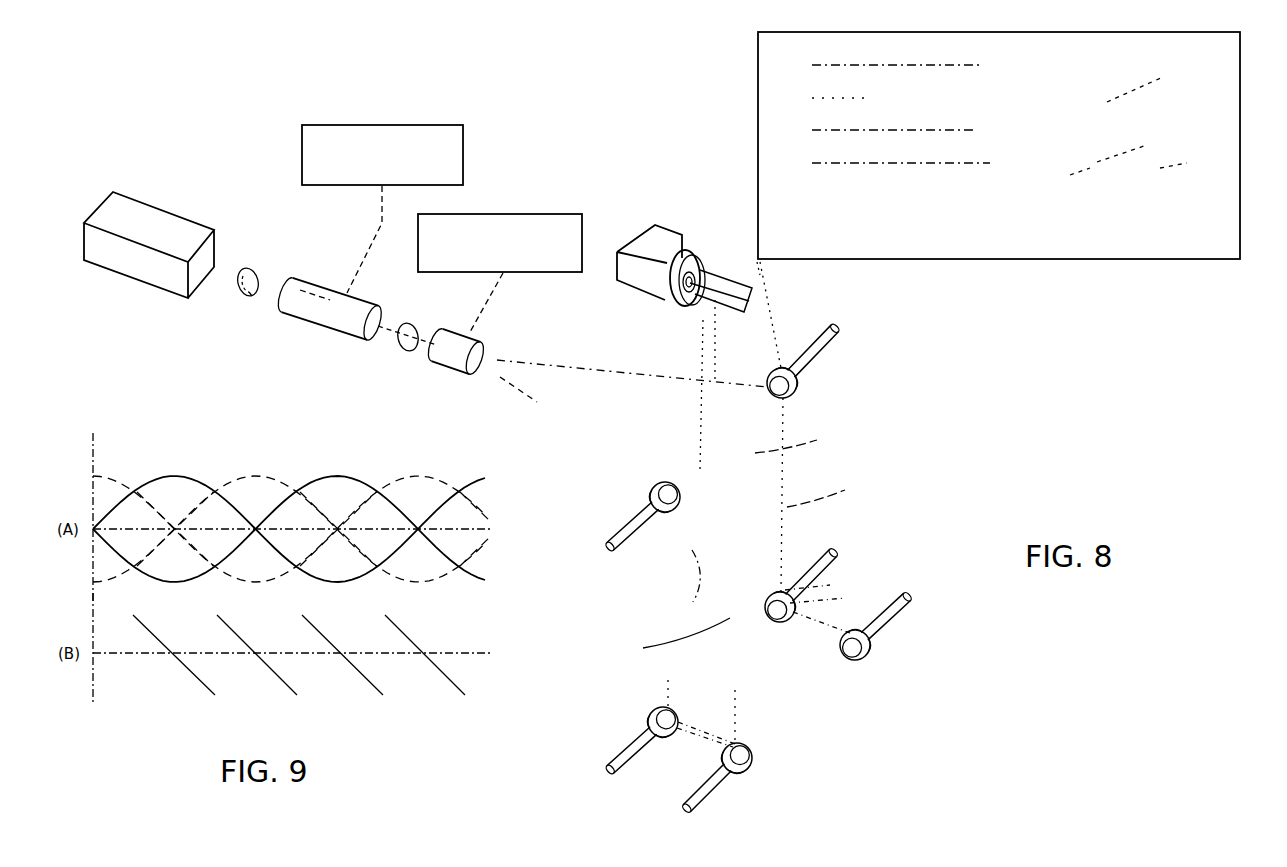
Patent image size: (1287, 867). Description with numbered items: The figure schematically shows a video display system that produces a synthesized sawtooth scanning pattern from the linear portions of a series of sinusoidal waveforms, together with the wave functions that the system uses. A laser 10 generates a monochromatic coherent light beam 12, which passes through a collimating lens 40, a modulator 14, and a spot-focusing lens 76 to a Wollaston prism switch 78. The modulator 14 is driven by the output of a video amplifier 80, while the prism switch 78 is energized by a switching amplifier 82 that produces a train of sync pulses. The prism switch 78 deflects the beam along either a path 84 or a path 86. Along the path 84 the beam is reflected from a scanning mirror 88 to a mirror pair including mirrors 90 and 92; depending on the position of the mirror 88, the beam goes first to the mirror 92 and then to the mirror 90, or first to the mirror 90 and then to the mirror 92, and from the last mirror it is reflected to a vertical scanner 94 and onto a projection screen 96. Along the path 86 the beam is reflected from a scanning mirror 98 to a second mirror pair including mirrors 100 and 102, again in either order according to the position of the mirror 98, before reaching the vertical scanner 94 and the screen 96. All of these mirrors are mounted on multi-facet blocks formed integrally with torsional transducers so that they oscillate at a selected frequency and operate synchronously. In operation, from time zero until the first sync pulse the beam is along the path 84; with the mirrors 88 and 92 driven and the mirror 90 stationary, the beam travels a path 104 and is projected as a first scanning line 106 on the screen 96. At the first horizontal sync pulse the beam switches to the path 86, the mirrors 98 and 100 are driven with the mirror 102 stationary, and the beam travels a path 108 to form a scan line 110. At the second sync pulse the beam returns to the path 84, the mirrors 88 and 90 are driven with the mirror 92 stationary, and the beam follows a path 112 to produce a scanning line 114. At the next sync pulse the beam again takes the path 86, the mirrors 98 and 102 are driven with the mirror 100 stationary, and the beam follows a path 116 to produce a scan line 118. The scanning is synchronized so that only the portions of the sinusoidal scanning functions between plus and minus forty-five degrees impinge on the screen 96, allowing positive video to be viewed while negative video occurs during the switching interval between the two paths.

The laser 10 is at (175, 215).
The light beam 12 is at (222, 268).
The collimating lens 40 is at (250, 295).
The modulator 14 is at (367, 303).
The spot-focusing lens 76 is at (400, 350).
The Wollaston prism switch 78 is at (470, 342).
The video amplifier 80 is at (405, 127).
The switching amplifier 82 is at (525, 215).
The path 84 is at (553, 415).
The path 86 is at (585, 365).
The scanning mirror 88 is at (655, 488).
The mirror 90 is at (648, 717).
The mirror 92 is at (752, 758).
The vertical scanner 94 is at (660, 228).
The projection screen 96 is at (758, 67).
The scanning mirror 98 is at (797, 382).
The mirror 100 is at (870, 653).
The mirror 102 is at (793, 617).
The path 104 is at (698, 578).
The first scanning line 106 is at (950, 62).
The path 108 is at (805, 442).
The scan line 110 is at (938, 90).
The path 112 is at (650, 646).
The scanning line 114 is at (920, 128).
The path 116 is at (845, 490).
The scan line 118 is at (915, 160).